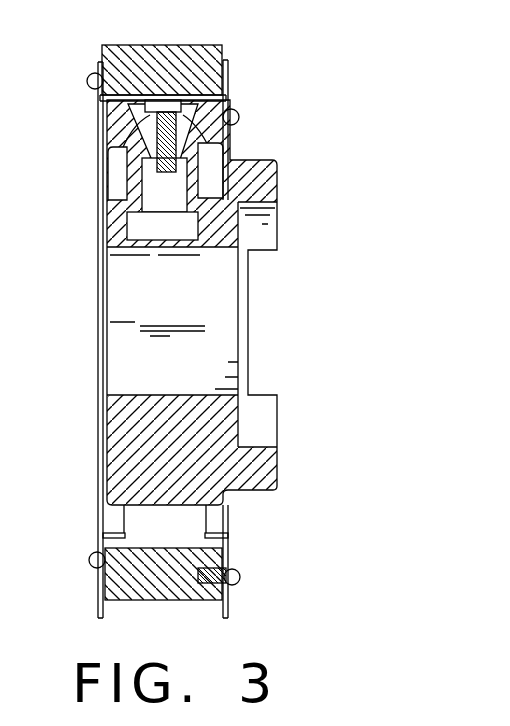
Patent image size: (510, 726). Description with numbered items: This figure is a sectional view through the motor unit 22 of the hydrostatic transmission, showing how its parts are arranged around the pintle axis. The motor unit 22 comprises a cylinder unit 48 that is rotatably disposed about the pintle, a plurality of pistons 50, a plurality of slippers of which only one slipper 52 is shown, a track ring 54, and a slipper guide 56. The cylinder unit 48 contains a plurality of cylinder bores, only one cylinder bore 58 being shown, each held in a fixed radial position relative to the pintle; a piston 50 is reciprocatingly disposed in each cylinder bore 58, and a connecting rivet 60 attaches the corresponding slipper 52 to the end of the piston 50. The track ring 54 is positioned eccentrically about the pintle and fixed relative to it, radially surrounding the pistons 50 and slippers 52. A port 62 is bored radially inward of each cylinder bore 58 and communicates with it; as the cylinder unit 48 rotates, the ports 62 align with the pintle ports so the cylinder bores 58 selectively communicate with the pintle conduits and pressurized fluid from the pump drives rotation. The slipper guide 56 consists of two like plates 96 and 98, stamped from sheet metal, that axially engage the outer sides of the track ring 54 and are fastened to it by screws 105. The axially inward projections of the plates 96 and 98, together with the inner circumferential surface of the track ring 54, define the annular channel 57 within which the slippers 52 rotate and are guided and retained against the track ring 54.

The motor unit 22 is at (262, 311).
The cylinder unit 48 is at (185, 461).
The piston 50 is at (103, 181).
The slipper 52 is at (232, 124).
The track ring 54 is at (174, 81).
The slipper guide 56 is at (242, 80).
The annular channel 57 is at (226, 535).
The cylinder bore 58 is at (192, 187).
The connecting rivet 60 is at (106, 154).
The port 62 is at (160, 246).
The slipper guide plate 96 is at (233, 558).
The slipper guide plate 98 is at (100, 538).
The screw 105 is at (240, 579).